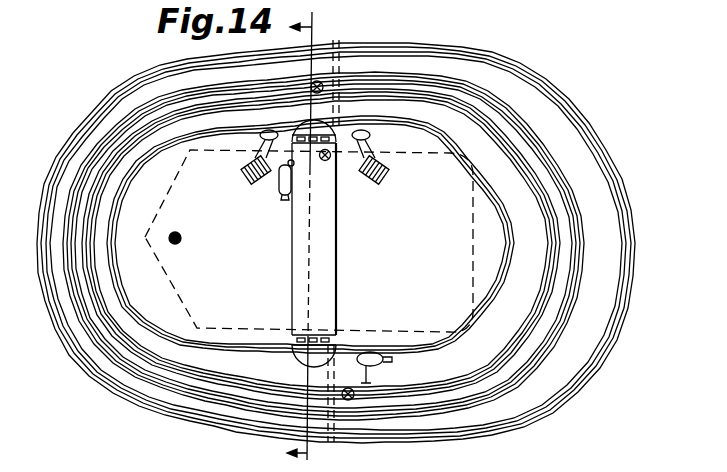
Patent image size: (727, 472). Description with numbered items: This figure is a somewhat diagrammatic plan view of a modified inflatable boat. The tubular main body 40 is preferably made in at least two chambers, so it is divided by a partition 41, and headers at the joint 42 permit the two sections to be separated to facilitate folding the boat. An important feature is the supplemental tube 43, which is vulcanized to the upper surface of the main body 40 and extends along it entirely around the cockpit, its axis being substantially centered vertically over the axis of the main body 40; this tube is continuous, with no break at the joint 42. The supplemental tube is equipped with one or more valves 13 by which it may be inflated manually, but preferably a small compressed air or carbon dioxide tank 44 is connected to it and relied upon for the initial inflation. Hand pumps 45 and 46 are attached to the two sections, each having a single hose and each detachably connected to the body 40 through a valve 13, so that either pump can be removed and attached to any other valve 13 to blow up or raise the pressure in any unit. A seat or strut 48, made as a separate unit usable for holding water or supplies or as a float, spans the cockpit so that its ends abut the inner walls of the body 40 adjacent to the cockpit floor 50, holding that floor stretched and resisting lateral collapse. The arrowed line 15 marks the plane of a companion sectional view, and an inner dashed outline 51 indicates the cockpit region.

The valve 13 is at (312, 85).
The section line 15- 15 is at (319, 242).
The main body 40 is at (580, 124).
The partition 41 is at (333, 368).
The joint 42 is at (340, 62).
The supplemental tube 43 is at (577, 217).
The compressed air or carbon dioxide tank 44 is at (380, 350).
The hand pump 45 is at (245, 170).
The hand pump 46 is at (385, 175).
The seat or strut 48 is at (325, 283).
The cockpit floor 50 is at (493, 272).
The inner tub outline 51 is at (233, 330).